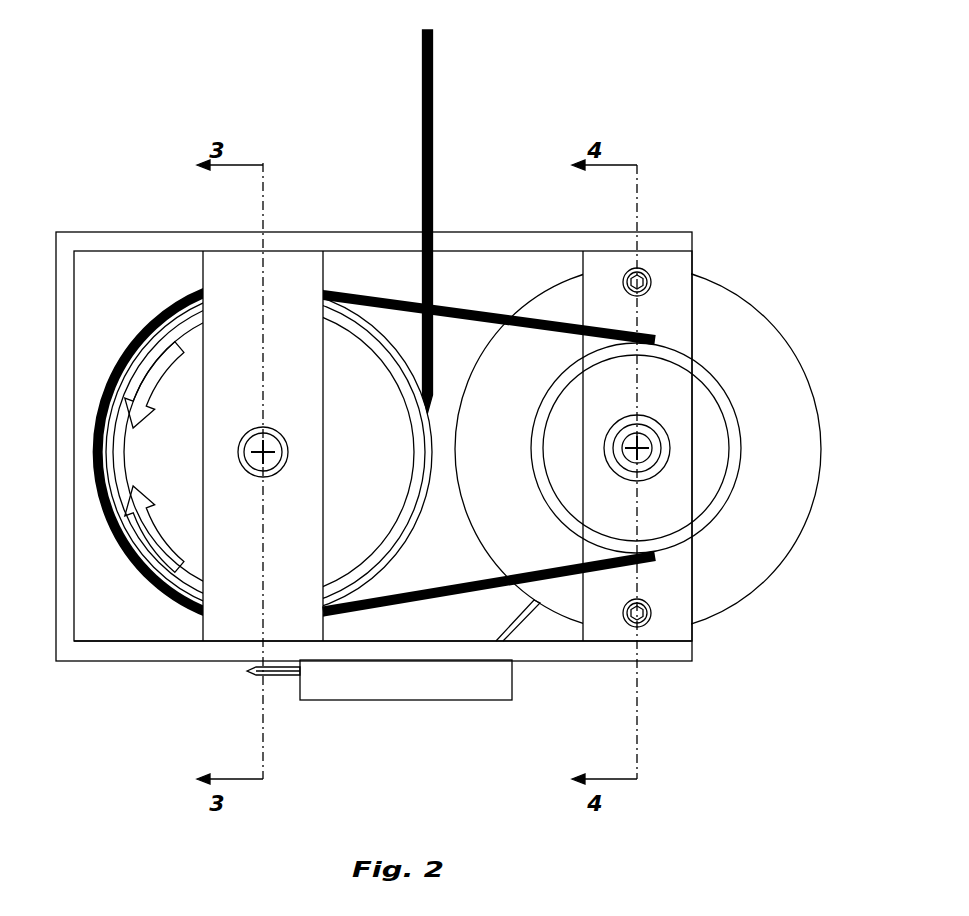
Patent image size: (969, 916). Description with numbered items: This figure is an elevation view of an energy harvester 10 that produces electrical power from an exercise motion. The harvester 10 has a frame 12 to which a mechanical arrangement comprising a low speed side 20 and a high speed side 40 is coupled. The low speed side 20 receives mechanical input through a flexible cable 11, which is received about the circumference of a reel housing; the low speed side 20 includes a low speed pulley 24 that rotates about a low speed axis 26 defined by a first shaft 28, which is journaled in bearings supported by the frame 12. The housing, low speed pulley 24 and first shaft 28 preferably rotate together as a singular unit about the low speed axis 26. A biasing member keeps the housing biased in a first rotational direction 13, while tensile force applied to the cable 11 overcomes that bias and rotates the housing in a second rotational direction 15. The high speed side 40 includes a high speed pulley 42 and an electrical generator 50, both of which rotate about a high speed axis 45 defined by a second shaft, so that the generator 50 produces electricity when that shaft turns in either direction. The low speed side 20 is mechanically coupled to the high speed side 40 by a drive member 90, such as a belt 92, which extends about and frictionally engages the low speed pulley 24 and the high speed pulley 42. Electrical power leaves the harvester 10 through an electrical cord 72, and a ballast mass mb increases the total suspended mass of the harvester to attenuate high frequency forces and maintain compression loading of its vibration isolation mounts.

The energy harvester 10 is at (89, 157).
The cable 11 is at (433, 82).
The frame 12 is at (350, 250).
The first rotational direction 13 is at (157, 535).
The second rotational direction 15 is at (163, 363).
The low speed side 20 is at (144, 618).
The low speed pulley 24 is at (123, 473).
The low speed axis 26 is at (245, 440).
The first shaft 28 is at (257, 462).
The high speed side 40 is at (804, 539).
The high speed pulley 42 is at (713, 389).
The high speed axis 45 is at (651, 446).
The electrical generator 50 is at (730, 323).
The electrical cord 72 is at (272, 678).
The drive member 90 is at (473, 310).
The belt 92 is at (558, 578).
The ballast mass mb is at (398, 682).